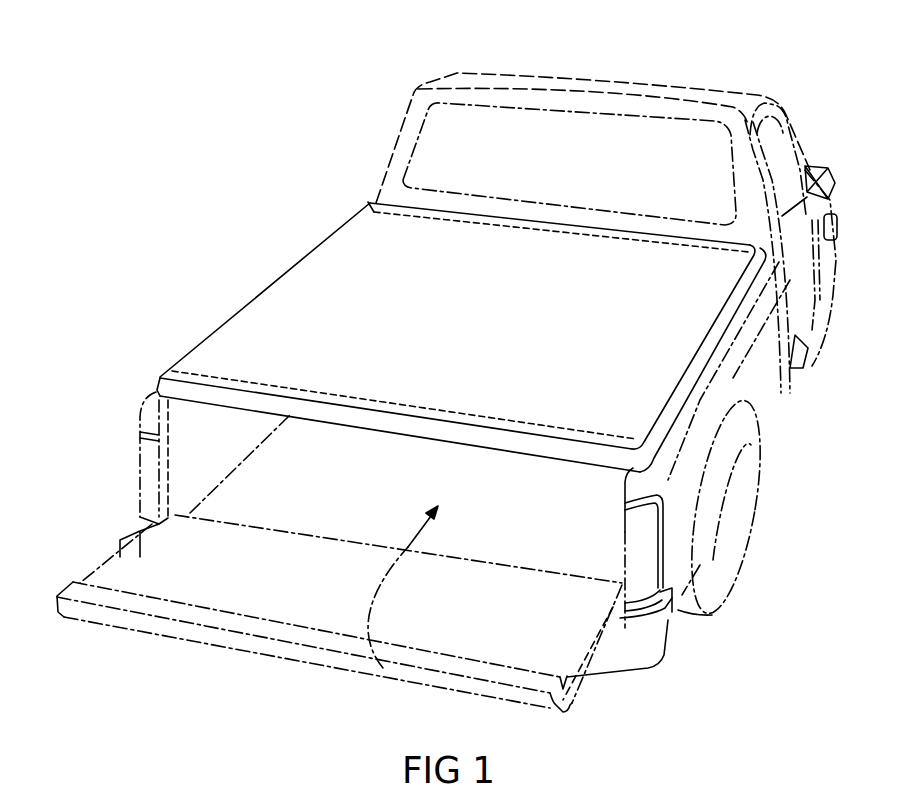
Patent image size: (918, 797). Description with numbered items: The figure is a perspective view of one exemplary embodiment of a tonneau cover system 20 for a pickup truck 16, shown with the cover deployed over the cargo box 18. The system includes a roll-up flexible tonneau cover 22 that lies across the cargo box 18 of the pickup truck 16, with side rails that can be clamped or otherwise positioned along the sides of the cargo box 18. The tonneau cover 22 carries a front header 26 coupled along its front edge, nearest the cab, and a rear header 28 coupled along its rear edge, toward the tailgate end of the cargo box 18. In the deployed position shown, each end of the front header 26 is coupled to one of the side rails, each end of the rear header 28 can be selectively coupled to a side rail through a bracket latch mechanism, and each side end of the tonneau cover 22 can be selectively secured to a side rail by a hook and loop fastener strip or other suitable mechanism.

The pickup truck 16 is at (628, 82).
The cargo box 18 is at (386, 666).
The tonneau cover system 20 is at (441, 305).
The tonneau cover 22 is at (262, 315).
The front header 26 is at (381, 198).
The rear header 28 is at (187, 372).